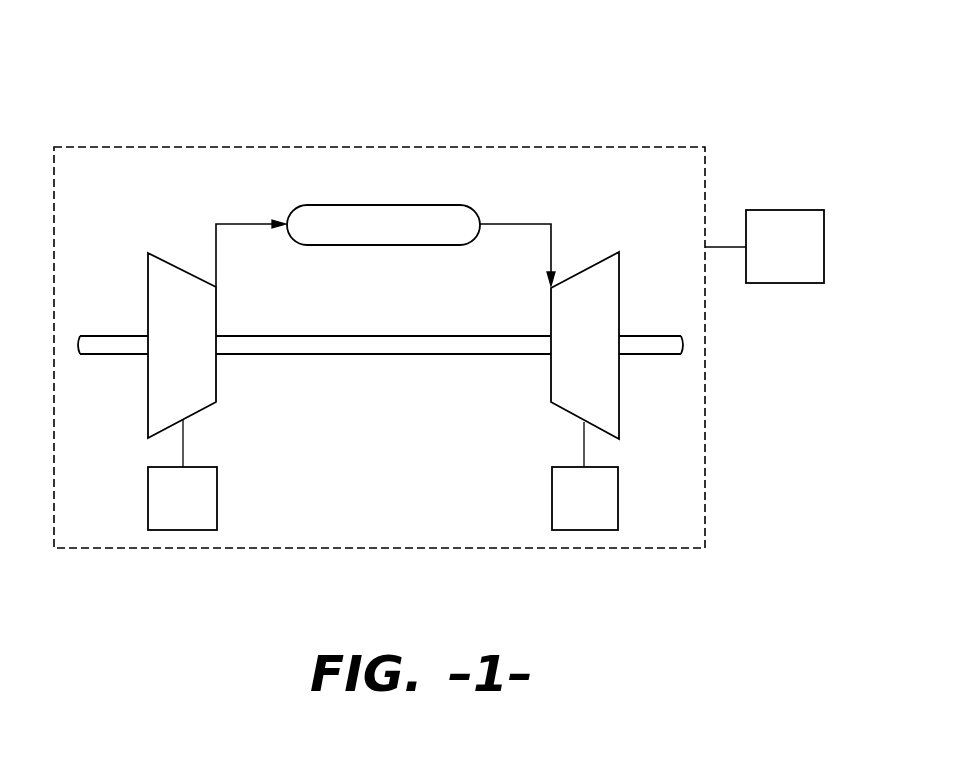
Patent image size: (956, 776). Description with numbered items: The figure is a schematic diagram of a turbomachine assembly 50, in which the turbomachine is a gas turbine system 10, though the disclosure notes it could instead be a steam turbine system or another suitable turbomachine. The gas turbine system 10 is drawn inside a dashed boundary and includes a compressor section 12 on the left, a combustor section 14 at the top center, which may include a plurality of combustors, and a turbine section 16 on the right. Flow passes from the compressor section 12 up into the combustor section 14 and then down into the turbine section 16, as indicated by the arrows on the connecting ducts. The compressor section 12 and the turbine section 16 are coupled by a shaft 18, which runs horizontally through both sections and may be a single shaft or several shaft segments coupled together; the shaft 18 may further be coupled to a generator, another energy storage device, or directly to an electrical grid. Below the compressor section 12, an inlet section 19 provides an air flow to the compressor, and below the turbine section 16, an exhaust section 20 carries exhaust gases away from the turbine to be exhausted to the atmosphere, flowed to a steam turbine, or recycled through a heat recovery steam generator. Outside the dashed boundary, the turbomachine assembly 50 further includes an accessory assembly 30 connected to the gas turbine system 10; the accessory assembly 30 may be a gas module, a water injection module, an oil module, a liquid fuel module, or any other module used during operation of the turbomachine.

The gas turbine system 10 is at (207, 147).
The compressor section 12 is at (148, 272).
The combustor section 14 is at (422, 205).
The turbine section 16 is at (619, 275).
The shaft 18 is at (343, 356).
The inlet section 19 is at (182, 475).
The exhaust section 20 is at (585, 476).
The accessory assembly 30 is at (764, 246).
The turbomachine assembly 50 is at (662, 89).